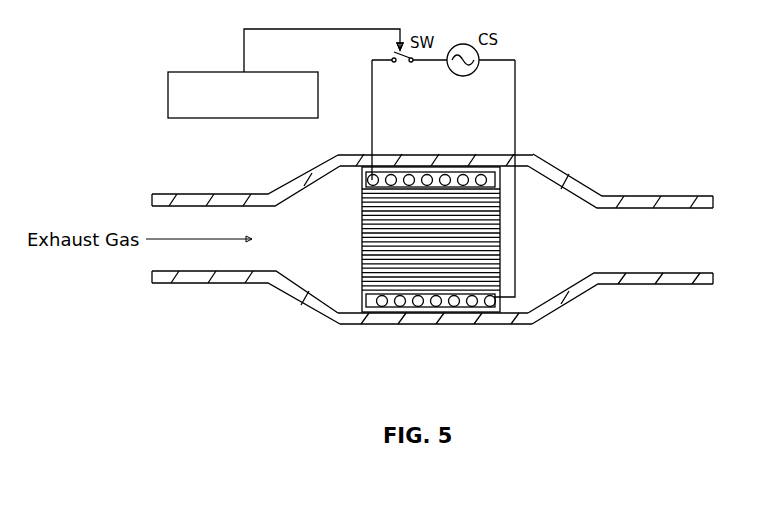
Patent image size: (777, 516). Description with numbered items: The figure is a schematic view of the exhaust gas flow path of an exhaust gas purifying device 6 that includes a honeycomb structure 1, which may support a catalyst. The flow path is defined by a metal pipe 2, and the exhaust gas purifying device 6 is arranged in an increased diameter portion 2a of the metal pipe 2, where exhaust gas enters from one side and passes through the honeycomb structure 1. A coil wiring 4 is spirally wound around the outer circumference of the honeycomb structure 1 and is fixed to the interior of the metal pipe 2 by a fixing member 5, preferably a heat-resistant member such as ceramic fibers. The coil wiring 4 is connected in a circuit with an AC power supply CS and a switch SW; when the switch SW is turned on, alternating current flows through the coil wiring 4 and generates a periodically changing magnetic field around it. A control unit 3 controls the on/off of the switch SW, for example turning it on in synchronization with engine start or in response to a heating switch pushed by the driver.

The honeycomb structure 1 is at (361, 252).
The metal pipe 2 is at (237, 194).
The increased diameter portion 2a is at (356, 154).
The control unit 3 is at (175, 72).
The coil wiring 4 is at (386, 172).
The fixing member 5 is at (494, 172).
The exhaust gas purifying device 6 is at (344, 216).